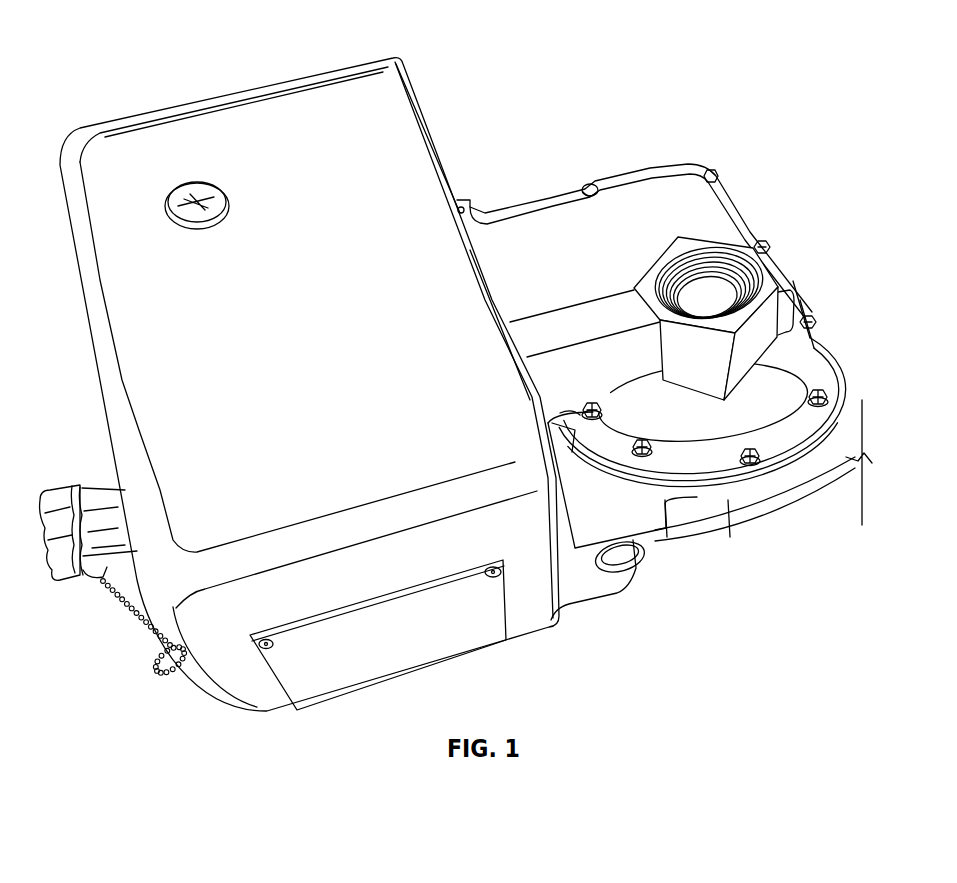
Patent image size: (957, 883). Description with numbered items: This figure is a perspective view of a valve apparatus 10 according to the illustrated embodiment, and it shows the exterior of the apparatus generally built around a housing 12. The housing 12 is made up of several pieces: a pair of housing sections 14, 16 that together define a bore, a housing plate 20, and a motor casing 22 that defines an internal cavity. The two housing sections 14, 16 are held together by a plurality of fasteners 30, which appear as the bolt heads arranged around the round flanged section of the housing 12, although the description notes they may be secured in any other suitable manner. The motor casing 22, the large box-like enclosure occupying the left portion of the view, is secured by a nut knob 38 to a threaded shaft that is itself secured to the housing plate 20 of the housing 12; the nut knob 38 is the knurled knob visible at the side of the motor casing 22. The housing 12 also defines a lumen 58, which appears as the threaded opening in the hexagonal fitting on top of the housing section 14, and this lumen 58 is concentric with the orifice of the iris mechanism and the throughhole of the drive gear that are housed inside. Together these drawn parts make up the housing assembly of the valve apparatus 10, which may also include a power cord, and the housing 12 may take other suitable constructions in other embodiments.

The valve apparatus 10 is at (461, 359).
The housing 12 is at (356, 63).
The housing section 14 is at (663, 202).
The housing section 16 is at (731, 500).
The housing plate 20 is at (427, 124).
The motor casing 22 is at (130, 120).
The fasteners 30 is at (591, 186).
The nut knob 38 is at (58, 567).
The lumen 58 is at (752, 284).